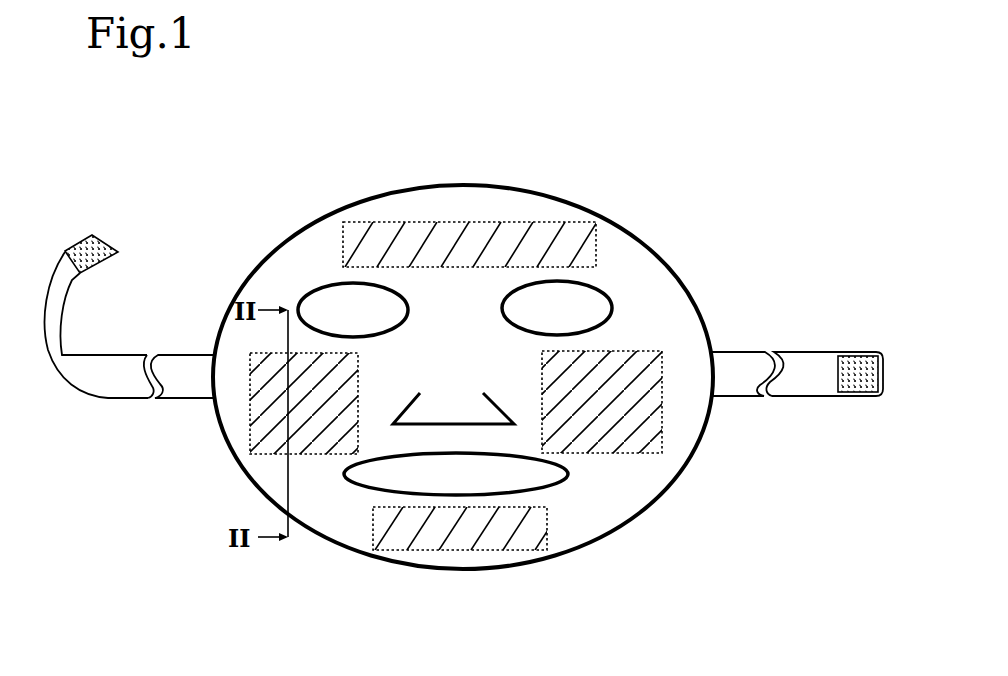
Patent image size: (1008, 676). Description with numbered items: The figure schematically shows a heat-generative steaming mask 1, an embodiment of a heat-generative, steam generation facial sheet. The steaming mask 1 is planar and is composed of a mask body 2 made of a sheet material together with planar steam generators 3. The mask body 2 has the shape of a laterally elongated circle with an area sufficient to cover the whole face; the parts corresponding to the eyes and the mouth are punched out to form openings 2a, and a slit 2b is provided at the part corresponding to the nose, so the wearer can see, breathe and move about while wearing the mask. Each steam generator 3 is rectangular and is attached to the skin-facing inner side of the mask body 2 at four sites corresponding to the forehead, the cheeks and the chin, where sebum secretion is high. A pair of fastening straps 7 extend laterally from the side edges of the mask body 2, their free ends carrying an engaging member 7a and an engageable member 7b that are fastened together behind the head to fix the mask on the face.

The steaming mask 1 is at (647, 134).
The mask body 2 is at (652, 272).
The openings 2a is at (326, 312).
The slit 2b is at (507, 403).
The steam generators 3 is at (503, 240).
The fastening straps 7 is at (122, 386).
The engaging member 7a is at (864, 357).
The engageable member 7b is at (71, 246).